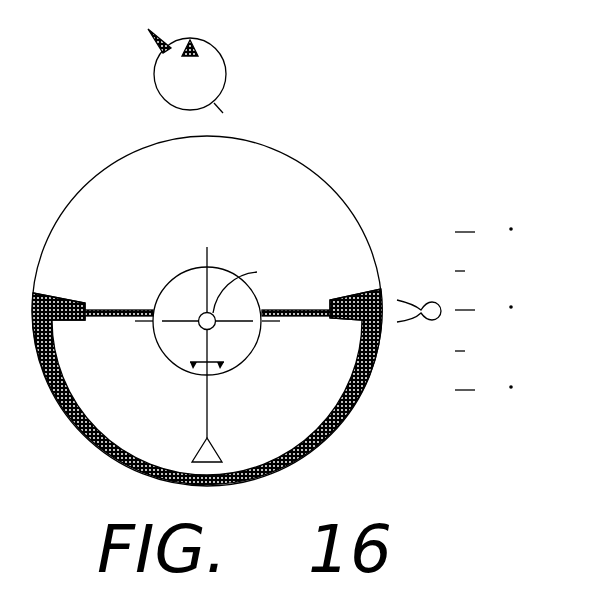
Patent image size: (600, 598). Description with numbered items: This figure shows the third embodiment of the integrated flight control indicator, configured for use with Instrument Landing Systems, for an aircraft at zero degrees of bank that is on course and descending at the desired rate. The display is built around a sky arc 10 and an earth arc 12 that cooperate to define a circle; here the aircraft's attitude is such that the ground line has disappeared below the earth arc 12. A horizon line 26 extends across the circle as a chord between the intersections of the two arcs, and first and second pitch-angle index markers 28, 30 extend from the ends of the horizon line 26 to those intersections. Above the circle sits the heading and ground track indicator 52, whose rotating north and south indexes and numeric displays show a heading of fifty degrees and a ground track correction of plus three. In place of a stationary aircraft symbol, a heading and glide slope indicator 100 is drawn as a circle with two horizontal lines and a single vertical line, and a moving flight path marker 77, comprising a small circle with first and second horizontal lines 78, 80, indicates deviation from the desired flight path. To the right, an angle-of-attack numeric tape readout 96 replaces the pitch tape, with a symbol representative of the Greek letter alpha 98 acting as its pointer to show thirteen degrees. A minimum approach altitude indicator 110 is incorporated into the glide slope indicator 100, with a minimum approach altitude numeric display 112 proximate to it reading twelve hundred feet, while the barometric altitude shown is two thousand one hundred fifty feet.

The sky arc 10 is at (291, 154).
The earth arc 12 is at (327, 440).
The horizon line 26 is at (128, 310).
The first pitch-angle index marker 28 is at (63, 297).
The second pitch-angle index marker 30 is at (345, 298).
The heading and ground track indicator 52 is at (246, 56).
The flight path marker 77 is at (251, 283).
The first horizontal line 78 is at (136, 323).
The second horizontal line 80 is at (276, 323).
The angle-of-attack numeric tape readout 96 is at (520, 315).
The alpha symbol 98 is at (417, 322).
The heading and glide slope indicator 100 is at (180, 272).
The minimum approach altitude indicator 110 is at (228, 364).
The minimum approach altitude numeric display 112 is at (145, 385).